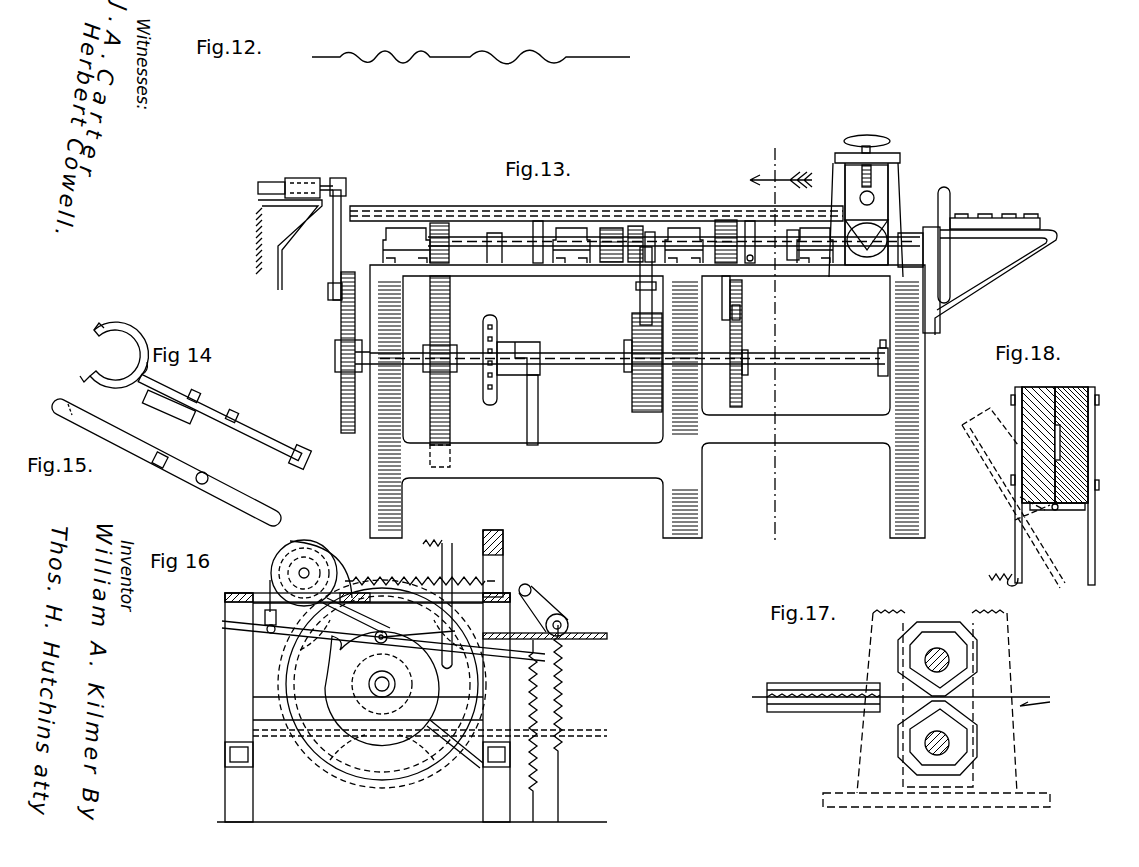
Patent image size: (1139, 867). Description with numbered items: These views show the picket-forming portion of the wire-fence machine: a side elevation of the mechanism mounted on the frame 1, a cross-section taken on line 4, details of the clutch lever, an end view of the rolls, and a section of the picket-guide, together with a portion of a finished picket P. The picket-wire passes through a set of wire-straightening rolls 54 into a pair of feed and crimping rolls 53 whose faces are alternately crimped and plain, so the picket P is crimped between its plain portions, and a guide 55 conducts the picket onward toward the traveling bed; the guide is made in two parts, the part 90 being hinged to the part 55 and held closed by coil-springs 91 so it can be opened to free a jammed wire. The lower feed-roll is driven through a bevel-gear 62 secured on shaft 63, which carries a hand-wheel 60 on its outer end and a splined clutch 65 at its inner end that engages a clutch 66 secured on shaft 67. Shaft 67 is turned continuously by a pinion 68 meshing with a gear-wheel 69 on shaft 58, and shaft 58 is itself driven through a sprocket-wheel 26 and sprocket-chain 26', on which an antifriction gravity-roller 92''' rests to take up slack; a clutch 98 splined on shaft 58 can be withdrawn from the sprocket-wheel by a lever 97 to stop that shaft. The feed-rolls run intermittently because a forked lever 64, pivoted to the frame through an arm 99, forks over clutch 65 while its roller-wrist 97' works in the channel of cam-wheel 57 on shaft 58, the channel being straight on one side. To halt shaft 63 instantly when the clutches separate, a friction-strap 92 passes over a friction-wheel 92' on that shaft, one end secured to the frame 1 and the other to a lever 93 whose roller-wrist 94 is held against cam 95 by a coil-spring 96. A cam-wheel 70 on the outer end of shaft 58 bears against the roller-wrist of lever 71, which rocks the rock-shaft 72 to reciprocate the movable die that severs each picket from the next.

In FIG. 13, the frame 1 is at (275, 280).
In FIG. 13, the section line 4 is at (781, 335).
In FIG. 13, the sprocket-wheel 26 is at (501, 357).
In FIG. 16, the sprocket-chain 26' is at (436, 684).
In FIG. 13, the feed and crimping rolls 53 is at (880, 180).
In FIG. 17, the feed and crimping rolls 53 is at (936, 708).
In FIG. 13, the wire-straightening rolls 54 is at (968, 216).
In FIG. 13, the picket-guide 55 is at (758, 209).
In FIG. 16, the picket-guide 55 is at (503, 538).
In FIG. 17, the picket-guide 55 is at (800, 684).
In FIG. 18, the picket-guide 55 is at (1070, 440).
In FIG. 13, the cam-wheel 57 is at (632, 326).
In FIG. 13, the shaft 58 is at (629, 357).
In FIG. 16, the shaft 58 is at (369, 682).
In FIG. 13, the hand-wheel 60 is at (950, 196).
In FIG. 13, the bevel-gear 62 is at (840, 268).
In FIG. 13, the shaft 63 is at (782, 256).
In FIG. 16, the shaft 63 is at (308, 572).
In FIG. 13, the forked lever 64 is at (640, 302).
In FIG. 14, the forked lever 64 is at (124, 362).
In FIG. 15, the forked lever 64 is at (166, 462).
In FIG. 13, the clutch 65 is at (640, 226).
In FIG. 13, the clutch 66 is at (612, 228).
In FIG. 13, the shaft 67 is at (452, 252).
In FIG. 13, the pinion 68 is at (445, 223).
In FIG. 13, the gear-wheel 69 is at (450, 300).
In FIG. 13, the cam-wheel 70 is at (340, 390).
In FIG. 16, the cam-wheel 70 is at (470, 618).
In FIG. 13, the lever 71 is at (333, 240).
In FIG. 16, the lever 71 is at (436, 598).
In FIG. 13, the rock-shaft 72 is at (258, 188).
In FIG. 16, the hinged part of picket-guide 90 is at (483, 532).
In FIG. 17, the hinged part of picket-guide 90 is at (835, 712).
In FIG. 18, the hinged part of picket-guide 90 is at (1022, 392).
In FIG. 16, the coil-springs 91 is at (406, 578).
In FIG. 18, the coil-springs 91 is at (1005, 592).
In FIG. 13, the friction-strap 92 is at (725, 242).
In FIG. 16, the friction-strap 92 is at (304, 587).
In FIG. 16, the friction-wheel 92' is at (259, 568).
In FIG. 16, the antifriction gravity-roller 92''' is at (565, 610).
In FIG. 13, the lever 93 is at (717, 298).
In FIG. 16, the lever 93 is at (288, 638).
In FIG. 13, the roller-wrist 94 is at (740, 311).
In FIG. 16, the roller-wrist 94 is at (390, 644).
In FIG. 13, the cam-wheel 95 is at (745, 333).
In FIG. 16, the cam-wheel 95 is at (327, 700).
In FIG. 16, the coil-spring 96 is at (530, 782).
In FIG. 13, the lever 97 is at (544, 410).
In FIG. 16, the lever 97 is at (455, 753).
In FIG. 13, the roller-wrist 97' is at (615, 311).
In FIG. 14, the roller-wrist 97' is at (310, 480).
In FIG. 13, the clutch 98 is at (520, 375).
In FIG. 13, the arm 99 is at (636, 286).
In FIG. 14, the arm 99 is at (178, 404).
In FIG. 15, the arm 99 is at (160, 466).
In FIG. 12, the picket P is at (471, 67).
In FIG. 17, the picket P is at (903, 689).